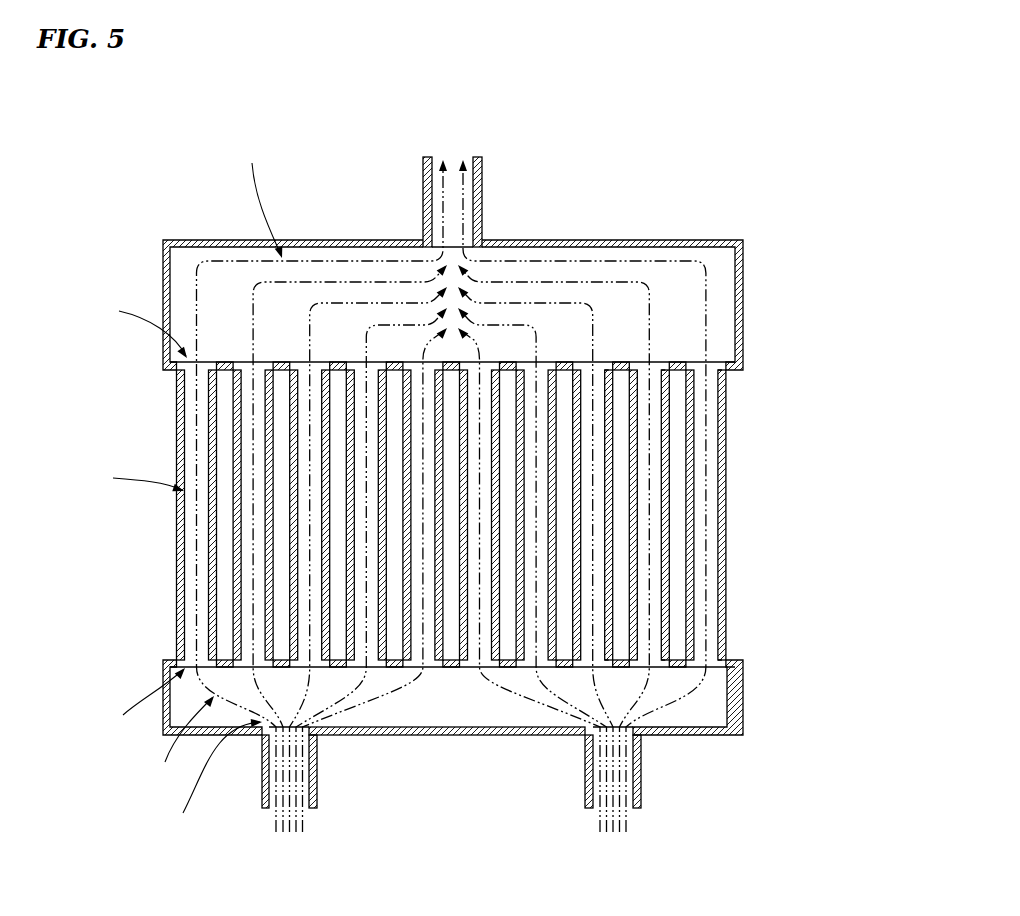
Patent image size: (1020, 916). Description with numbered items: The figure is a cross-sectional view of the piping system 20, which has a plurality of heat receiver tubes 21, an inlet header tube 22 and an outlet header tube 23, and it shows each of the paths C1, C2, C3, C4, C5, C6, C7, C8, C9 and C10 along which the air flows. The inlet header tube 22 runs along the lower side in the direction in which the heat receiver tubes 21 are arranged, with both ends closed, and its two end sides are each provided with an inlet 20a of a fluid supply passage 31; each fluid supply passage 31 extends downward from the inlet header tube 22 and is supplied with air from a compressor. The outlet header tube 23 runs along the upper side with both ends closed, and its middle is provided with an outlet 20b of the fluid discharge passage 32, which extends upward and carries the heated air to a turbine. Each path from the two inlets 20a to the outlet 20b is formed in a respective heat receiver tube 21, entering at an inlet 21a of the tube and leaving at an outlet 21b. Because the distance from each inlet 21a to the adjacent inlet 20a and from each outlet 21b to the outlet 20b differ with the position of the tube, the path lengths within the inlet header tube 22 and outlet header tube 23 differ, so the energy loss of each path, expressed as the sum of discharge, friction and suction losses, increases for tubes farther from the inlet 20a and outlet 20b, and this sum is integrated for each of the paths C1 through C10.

The piping system 20 is at (440, 448).
The inlet 20a is at (306, 741).
The outlet 20b is at (454, 233).
The heat receiver tubes 21 is at (612, 538).
The inlet of heat receiver tube 21a is at (712, 655).
The outlet of heat receiver tube 21b is at (712, 356).
The inlet header tube 22 is at (745, 708).
The outlet header tube 23 is at (745, 264).
The fluid supply passage 31 is at (262, 794).
The fluid discharge passage 32 is at (483, 180).
The path C1 is at (222, 258).
The path C2 is at (347, 278).
The path C3 is at (395, 302).
The path C4 is at (341, 694).
The path C5 is at (393, 698).
The path C6 is at (508, 690).
The path C7 is at (560, 695).
The path C8 is at (538, 302).
The path C9 is at (583, 278).
The path C10 is at (661, 259).